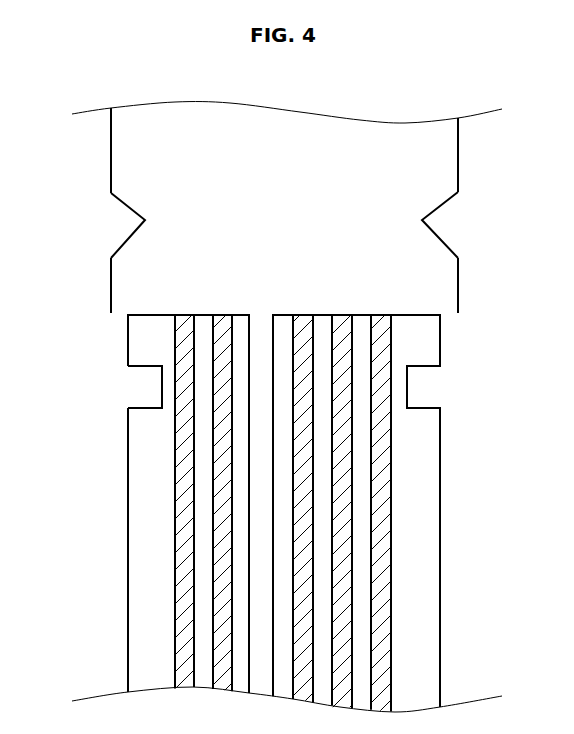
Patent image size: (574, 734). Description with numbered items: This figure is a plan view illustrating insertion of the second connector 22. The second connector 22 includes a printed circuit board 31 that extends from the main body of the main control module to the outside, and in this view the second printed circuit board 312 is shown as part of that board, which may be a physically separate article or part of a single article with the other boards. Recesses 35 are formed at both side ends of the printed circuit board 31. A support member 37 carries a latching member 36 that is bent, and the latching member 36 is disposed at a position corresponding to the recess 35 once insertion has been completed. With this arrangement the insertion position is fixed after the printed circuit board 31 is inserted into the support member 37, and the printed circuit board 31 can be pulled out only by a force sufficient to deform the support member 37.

The second connector 22 is at (128, 527).
The printed circuit board 31 is at (423, 557).
The second printed circuit board 312 is at (142, 610).
The recess 35 is at (143, 407).
The latching member 36 is at (145, 220).
The support member 37 is at (111, 160).